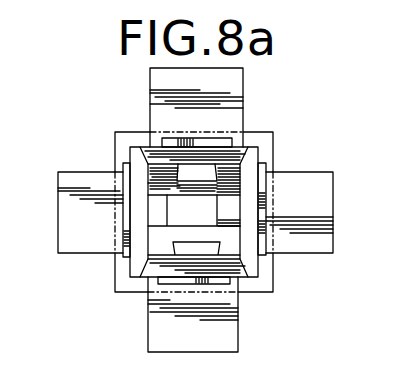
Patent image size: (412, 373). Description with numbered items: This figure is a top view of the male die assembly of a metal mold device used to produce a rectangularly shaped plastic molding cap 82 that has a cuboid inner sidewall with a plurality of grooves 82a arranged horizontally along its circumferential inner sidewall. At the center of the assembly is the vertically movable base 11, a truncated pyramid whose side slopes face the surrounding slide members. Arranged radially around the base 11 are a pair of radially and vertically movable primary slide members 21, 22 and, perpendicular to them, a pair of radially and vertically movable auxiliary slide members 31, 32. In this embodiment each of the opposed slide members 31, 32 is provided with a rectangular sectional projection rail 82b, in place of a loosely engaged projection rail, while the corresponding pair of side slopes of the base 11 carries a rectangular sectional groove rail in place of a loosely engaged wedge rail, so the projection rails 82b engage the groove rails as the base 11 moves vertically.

The base 11 is at (233, 181).
The primary slide member 21 is at (193, 268).
The primary slide member 22 is at (132, 152).
The auxiliary slide member 31 is at (143, 215).
The auxiliary slide member 32 is at (260, 270).
The plastic molding cap 82 is at (275, 210).
The grooves 82a is at (265, 228).
The rectangular sectional projection rail 82b is at (182, 219).